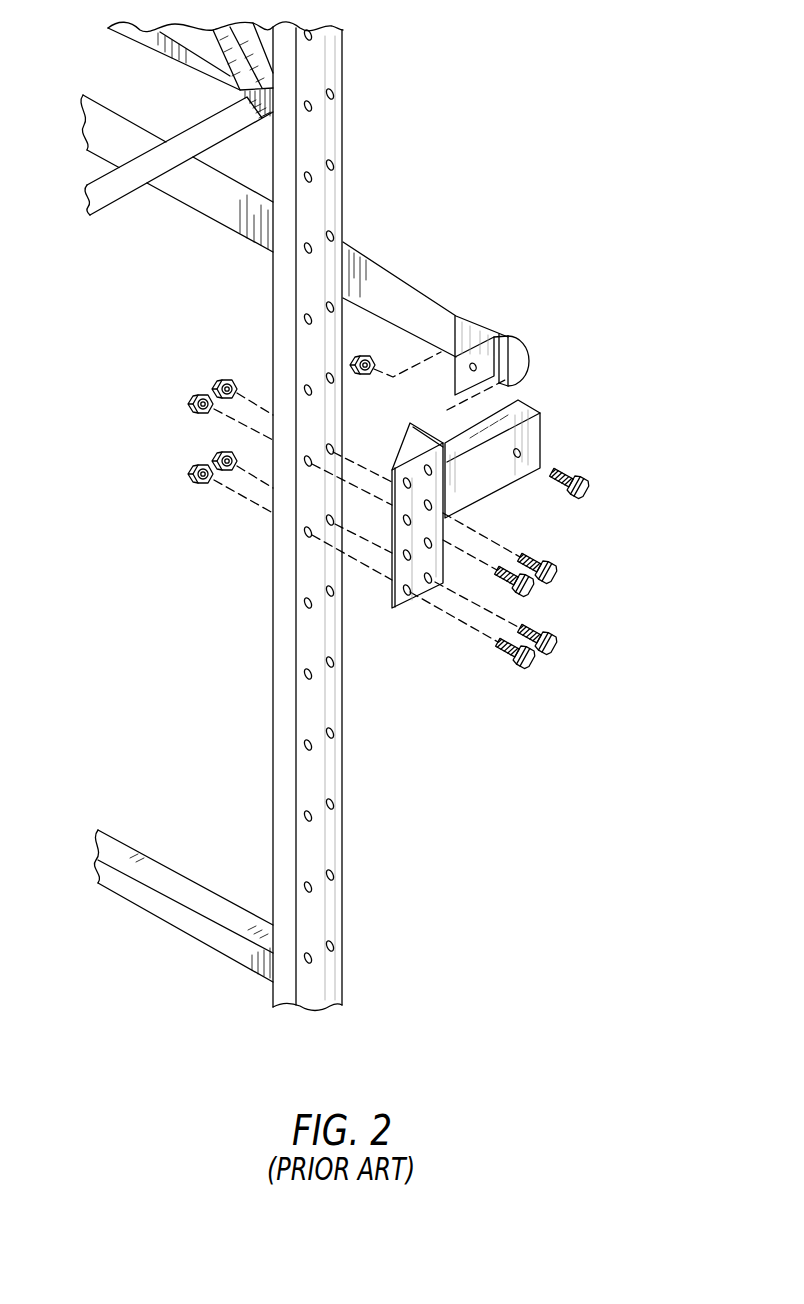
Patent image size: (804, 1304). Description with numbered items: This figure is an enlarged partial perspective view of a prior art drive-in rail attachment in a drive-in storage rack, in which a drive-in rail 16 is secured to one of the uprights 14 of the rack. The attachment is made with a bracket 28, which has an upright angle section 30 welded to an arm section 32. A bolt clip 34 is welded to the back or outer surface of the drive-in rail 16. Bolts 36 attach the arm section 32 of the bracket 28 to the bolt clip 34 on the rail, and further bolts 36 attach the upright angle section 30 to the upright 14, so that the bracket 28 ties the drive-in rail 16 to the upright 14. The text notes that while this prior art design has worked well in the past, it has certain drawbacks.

The upright 14 is at (328, 852).
The drive-in rail 16 is at (397, 288).
The bracket 28 is at (405, 620).
The upright angle section 30 is at (415, 437).
The arm section 32 is at (540, 432).
The bolt clip 34 is at (490, 352).
The bolts 36 is at (587, 490).